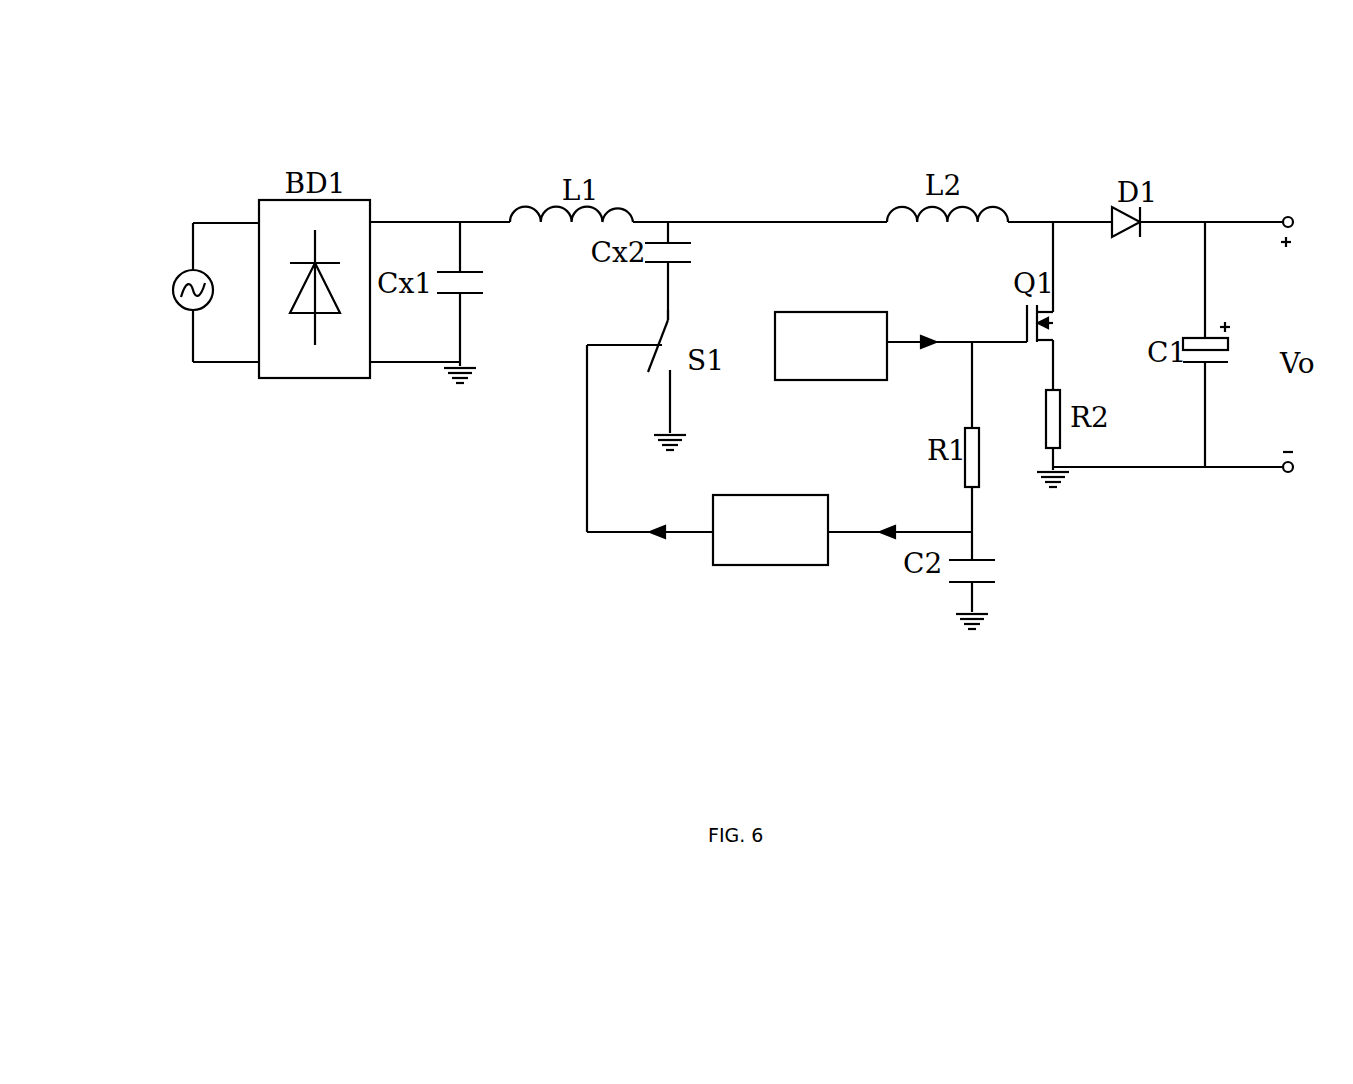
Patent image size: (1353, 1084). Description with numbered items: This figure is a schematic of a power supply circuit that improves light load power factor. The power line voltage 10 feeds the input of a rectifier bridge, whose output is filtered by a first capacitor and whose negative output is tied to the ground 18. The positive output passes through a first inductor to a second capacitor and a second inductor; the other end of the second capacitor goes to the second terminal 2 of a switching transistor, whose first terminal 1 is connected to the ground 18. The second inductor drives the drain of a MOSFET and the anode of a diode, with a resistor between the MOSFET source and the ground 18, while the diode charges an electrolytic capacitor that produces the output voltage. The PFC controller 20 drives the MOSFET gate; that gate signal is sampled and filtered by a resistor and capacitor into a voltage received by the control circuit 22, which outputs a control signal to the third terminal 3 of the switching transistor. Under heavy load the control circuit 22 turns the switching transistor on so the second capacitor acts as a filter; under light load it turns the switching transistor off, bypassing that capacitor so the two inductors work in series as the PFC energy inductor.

The power line voltage 10 is at (167, 355).
The PFC controller 20 is at (797, 311).
The control circuit 22 is at (740, 567).
The ground 18 is at (978, 637).
The first terminal 1 is at (665, 410).
The second terminal 2 is at (656, 313).
The third terminal 3 is at (624, 363).